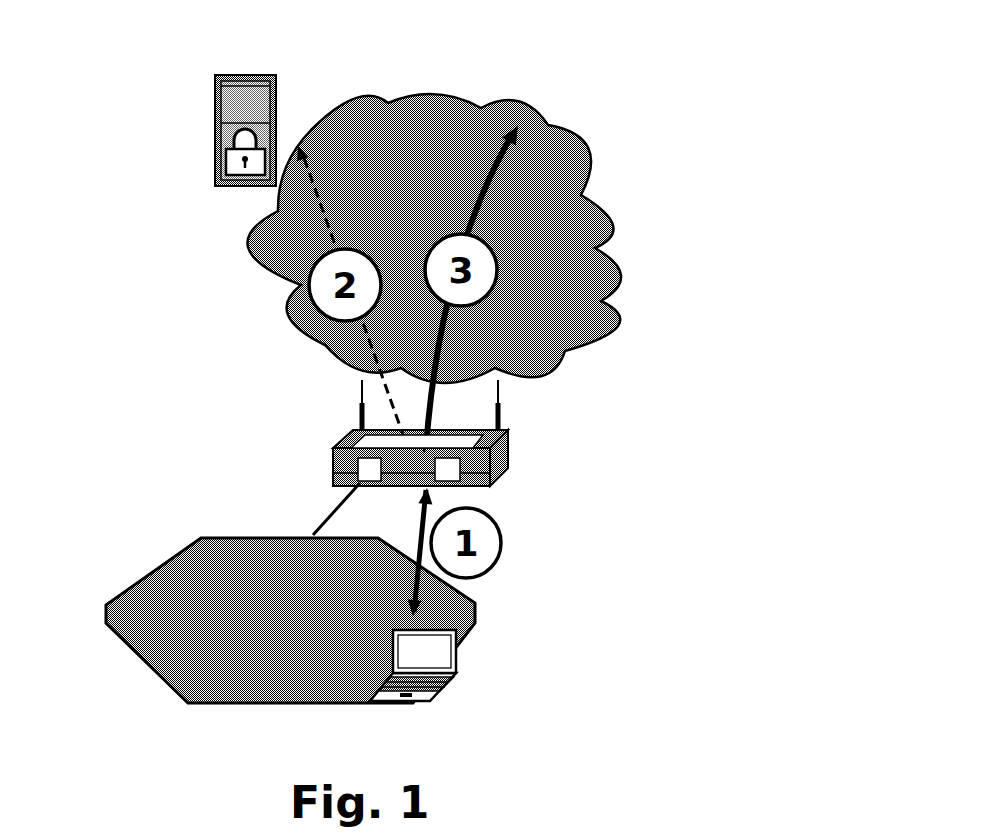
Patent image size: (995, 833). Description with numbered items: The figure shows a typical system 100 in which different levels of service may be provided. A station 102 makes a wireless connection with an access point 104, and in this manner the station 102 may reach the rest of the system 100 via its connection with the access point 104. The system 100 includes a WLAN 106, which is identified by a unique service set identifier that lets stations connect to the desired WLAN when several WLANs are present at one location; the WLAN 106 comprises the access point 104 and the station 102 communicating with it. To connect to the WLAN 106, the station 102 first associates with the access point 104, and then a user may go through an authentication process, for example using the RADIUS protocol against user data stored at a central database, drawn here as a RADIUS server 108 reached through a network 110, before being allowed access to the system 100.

The system 100 is at (764, 78).
The station 102 is at (452, 655).
The access point 104 is at (505, 440).
The WLAN 106 is at (152, 552).
The RADIUS server 108 is at (229, 64).
The network cloud 110 is at (380, 90).